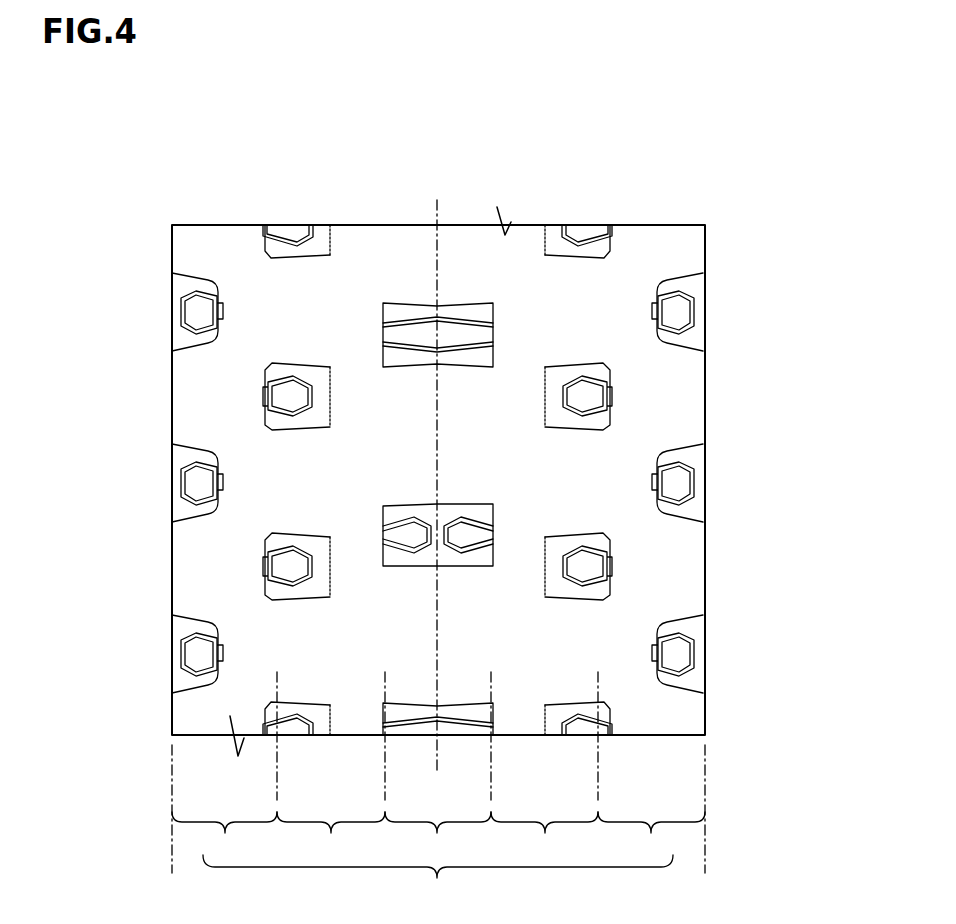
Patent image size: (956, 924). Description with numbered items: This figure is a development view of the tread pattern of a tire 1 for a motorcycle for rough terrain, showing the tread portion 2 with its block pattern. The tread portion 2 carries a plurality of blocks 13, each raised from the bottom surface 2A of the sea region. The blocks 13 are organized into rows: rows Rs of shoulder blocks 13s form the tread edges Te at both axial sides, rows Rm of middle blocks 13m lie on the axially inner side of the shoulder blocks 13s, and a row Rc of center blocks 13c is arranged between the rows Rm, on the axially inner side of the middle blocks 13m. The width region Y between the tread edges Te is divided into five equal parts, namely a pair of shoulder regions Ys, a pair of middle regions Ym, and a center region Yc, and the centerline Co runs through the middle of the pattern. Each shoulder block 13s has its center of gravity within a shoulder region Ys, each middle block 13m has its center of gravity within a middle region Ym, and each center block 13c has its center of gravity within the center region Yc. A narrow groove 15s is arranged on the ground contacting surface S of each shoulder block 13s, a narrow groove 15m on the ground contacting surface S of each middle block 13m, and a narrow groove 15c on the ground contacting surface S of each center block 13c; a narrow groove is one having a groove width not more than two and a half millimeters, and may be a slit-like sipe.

The tire 1 is at (743, 219).
The tread portion 2 is at (463, 438).
The bottom surface 2A is at (558, 478).
The blocks 13 is at (463, 427).
The center blocks 13c is at (460, 303).
The middle blocks 13m is at (610, 543).
The shoulder blocks 13s is at (683, 350).
The narrow groove 15c is at (422, 518).
The narrow groove 15m is at (281, 413).
The narrow groove 15s is at (206, 497).
The ground contacting surface S is at (278, 372).
The rows of shoulder blocks Rs is at (197, 209).
The rows of middle blocks Rm is at (301, 209).
The row of center blocks Rc is at (413, 208).
The tire equator Co is at (436, 472).
The tread edges Te is at (172, 768).
The shoulder regions Ys is at (438, 837).
The middle regions Ym is at (437, 767).
The center region Yc is at (438, 837).
The width region Y is at (438, 880).